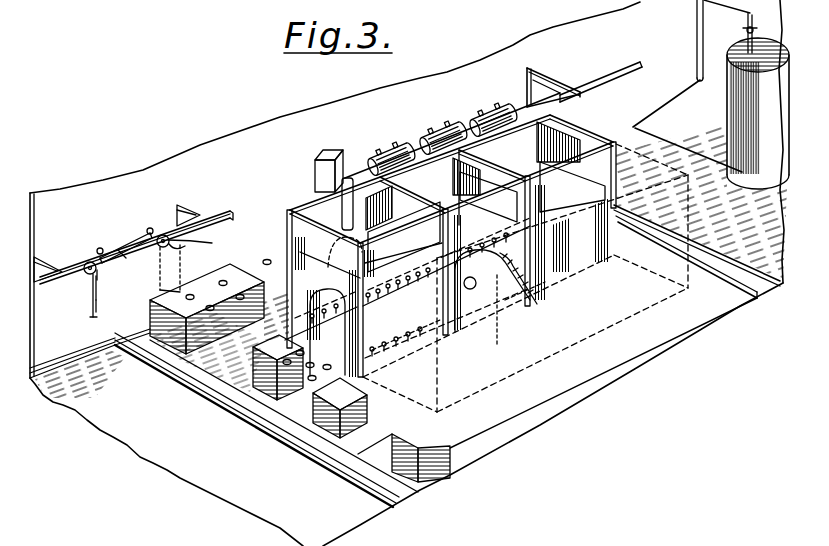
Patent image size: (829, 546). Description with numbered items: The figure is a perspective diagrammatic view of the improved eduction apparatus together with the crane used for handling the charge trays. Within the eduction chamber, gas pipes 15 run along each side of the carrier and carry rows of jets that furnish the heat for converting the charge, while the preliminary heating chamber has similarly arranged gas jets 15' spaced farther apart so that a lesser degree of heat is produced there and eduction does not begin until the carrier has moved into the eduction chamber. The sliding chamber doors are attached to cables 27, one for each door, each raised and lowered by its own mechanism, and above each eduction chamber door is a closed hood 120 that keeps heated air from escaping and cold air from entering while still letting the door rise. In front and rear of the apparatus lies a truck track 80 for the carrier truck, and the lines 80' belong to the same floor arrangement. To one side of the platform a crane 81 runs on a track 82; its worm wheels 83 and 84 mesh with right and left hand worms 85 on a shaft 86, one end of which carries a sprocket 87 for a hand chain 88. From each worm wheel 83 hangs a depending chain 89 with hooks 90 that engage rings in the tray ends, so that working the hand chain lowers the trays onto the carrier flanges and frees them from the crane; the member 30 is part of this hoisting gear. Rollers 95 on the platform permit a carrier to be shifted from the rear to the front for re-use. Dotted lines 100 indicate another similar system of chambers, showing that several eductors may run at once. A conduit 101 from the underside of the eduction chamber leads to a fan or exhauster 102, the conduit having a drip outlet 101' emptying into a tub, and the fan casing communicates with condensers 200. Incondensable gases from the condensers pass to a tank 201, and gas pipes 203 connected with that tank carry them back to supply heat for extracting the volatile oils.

The gas pipes 15 is at (540, 294).
The gas jets 15' is at (406, 334).
The cables 27 is at (432, 197).
The rod 30 is at (100, 284).
The truck track 80 is at (697, 251).
The floor channel 80' is at (257, 422).
The crane 81 is at (126, 240).
The track 82 is at (219, 209).
The worm wheels 83 is at (170, 246).
The worm wheel 84 is at (88, 281).
The right and left hand worms 85 is at (91, 261).
The shaft 86 is at (122, 266).
The sprocket or chain wheel 87 is at (212, 243).
The hand chain 88 is at (181, 264).
The depending chain 89 is at (98, 307).
The hooks 90 is at (315, 380).
The rollers 95 is at (210, 305).
The dotted lines 100 is at (438, 366).
The conduit 101 is at (423, 312).
The drip outlet 101' is at (308, 229).
The fan or exhauster 102 is at (352, 155).
The hood 120 is at (445, 218).
The condensers 200 is at (446, 136).
The tank 201 is at (730, 122).
The gas pipes 203 is at (660, 128).